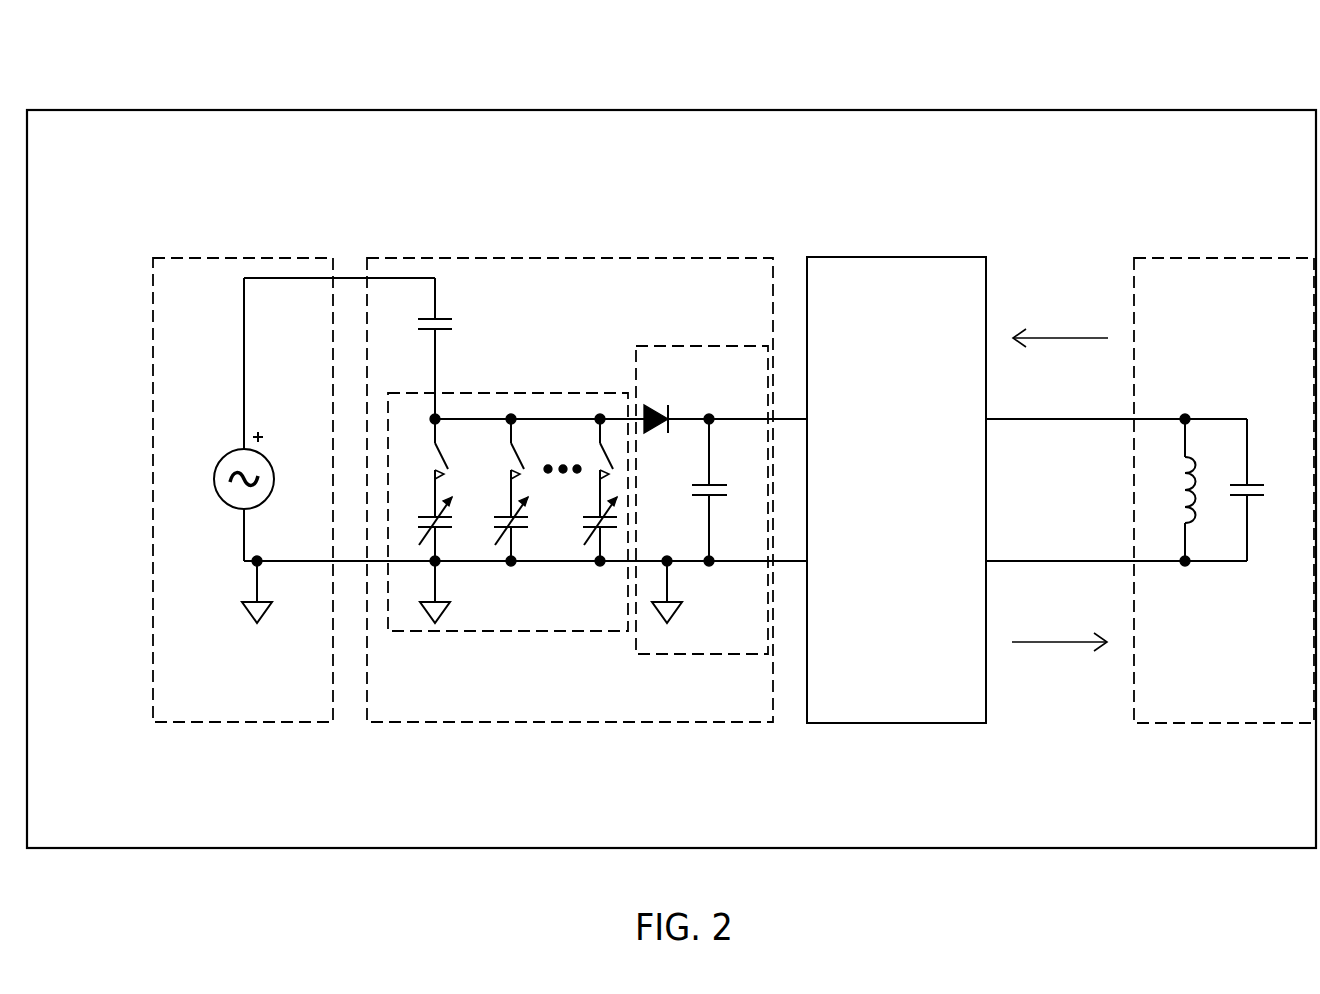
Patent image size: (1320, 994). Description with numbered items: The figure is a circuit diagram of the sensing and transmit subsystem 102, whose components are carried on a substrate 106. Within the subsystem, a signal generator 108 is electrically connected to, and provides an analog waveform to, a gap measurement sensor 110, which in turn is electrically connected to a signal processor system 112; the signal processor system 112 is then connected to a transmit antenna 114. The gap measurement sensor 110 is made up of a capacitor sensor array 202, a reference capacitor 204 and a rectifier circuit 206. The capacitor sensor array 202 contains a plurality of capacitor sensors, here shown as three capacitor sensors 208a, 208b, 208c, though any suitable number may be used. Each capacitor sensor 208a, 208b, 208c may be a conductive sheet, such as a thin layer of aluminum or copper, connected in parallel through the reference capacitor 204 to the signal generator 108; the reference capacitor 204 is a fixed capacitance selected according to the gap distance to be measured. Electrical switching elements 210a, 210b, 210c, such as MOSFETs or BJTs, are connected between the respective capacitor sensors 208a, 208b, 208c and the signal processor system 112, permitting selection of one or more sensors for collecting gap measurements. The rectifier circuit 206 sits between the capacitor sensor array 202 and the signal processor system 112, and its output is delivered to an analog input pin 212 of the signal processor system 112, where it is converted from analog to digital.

The sensing and transmit subsystem 102 is at (671, 461).
The substrate 106 is at (1030, 848).
The signal generator 108 is at (222, 722).
The gap measurement sensor 110 is at (587, 544).
The signal processor system 112 is at (896, 459).
The transmit antenna 114 is at (1160, 723).
The capacitor sensor array 202 is at (519, 506).
The reference capacitor 204 is at (447, 318).
The rectifier circuit 206 is at (713, 657).
The capacitor sensor 208a is at (488, 504).
The capacitor sensor 208b is at (512, 481).
The capacitor sensor 208c is at (586, 522).
The electrical switching element 210a is at (437, 443).
The electrical switching element 210b is at (515, 447).
The electrical switching element 210c is at (600, 446).
The analog input pin 212 is at (807, 419).